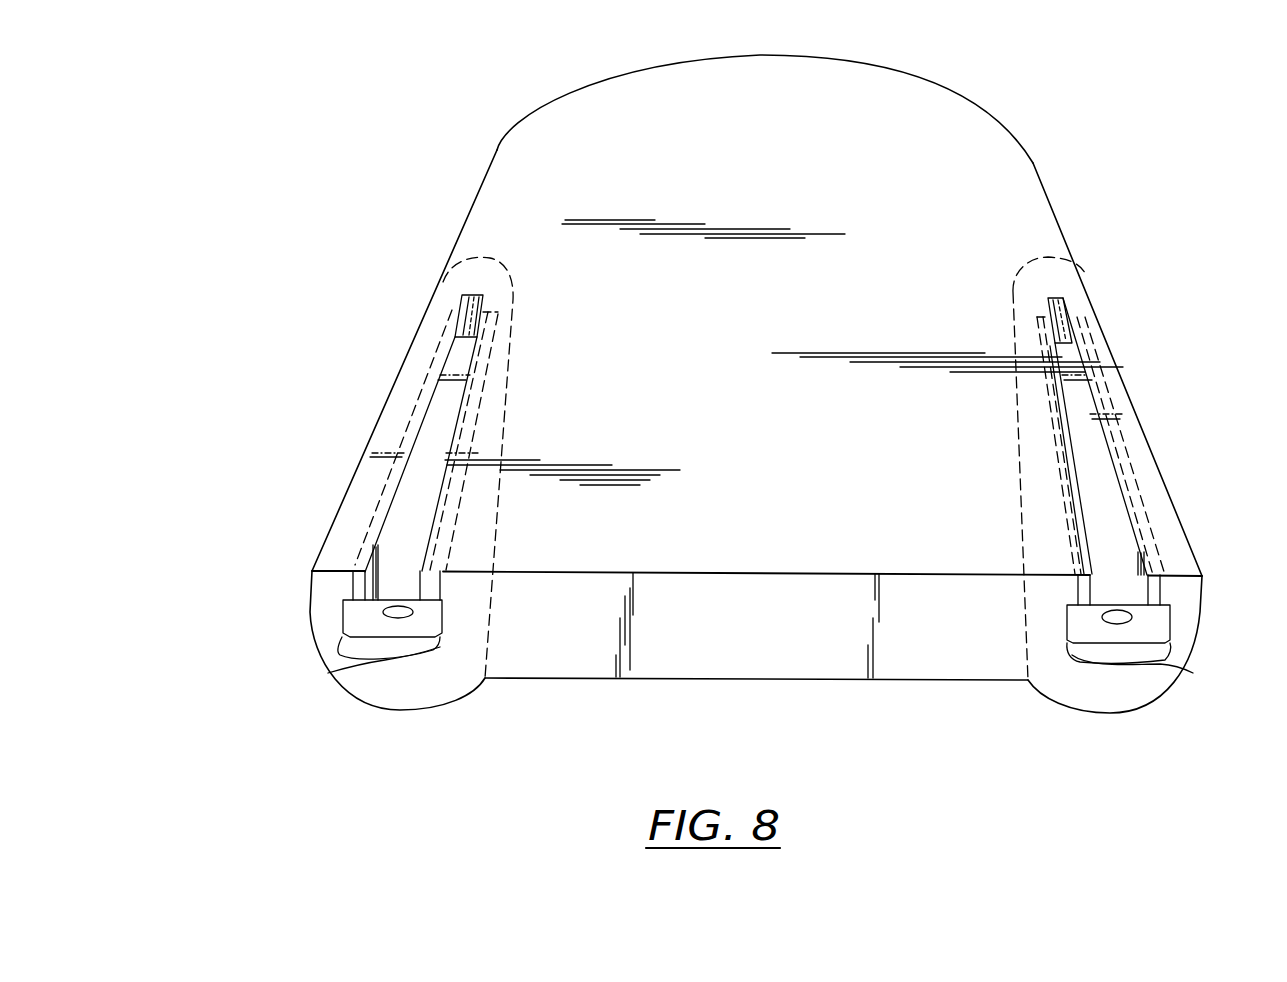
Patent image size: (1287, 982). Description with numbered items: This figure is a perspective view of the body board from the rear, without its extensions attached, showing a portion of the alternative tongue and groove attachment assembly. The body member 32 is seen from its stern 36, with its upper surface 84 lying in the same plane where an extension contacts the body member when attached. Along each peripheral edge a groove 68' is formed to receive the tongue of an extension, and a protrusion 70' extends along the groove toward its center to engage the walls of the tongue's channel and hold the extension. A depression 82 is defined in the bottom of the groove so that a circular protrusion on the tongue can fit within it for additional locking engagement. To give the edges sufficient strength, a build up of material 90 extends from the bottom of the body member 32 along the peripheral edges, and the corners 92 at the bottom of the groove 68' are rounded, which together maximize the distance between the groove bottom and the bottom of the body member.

The upper surface 84 is at (500, 217).
The build up of material 90 is at (468, 269).
The body member 32 is at (722, 417).
The stern 36 is at (815, 679).
The groove 68' is at (767, 435).
The protrusion 70' is at (754, 546).
The depression 82 is at (383, 612).
The rounded corners 92 is at (328, 673).